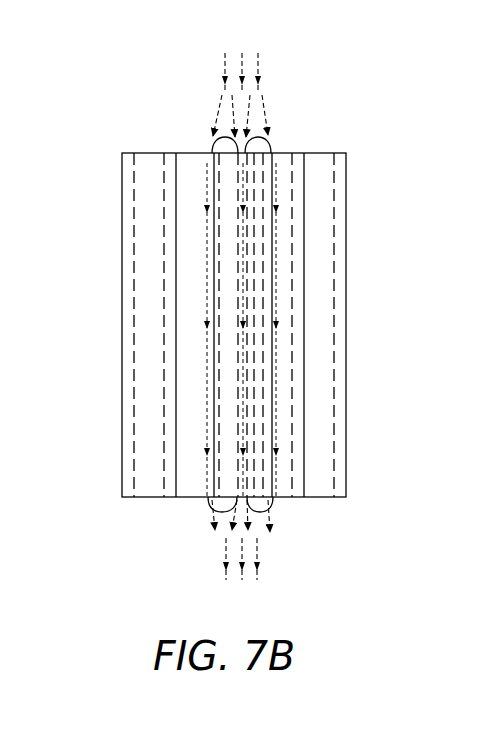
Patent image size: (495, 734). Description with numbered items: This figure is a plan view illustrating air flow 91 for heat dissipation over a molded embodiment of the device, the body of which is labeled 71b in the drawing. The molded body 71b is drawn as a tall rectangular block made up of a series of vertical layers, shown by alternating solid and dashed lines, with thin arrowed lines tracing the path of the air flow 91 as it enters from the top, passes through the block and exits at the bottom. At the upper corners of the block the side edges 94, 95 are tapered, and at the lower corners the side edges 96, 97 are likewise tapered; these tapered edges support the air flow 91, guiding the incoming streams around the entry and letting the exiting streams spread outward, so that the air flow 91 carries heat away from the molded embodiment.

The layered element 71b is at (104, 171).
The air flow 91 is at (240, 69).
The side edge 94 is at (217, 140).
The side edge 95 is at (255, 143).
The side edge 96 is at (227, 503).
The side edge 97 is at (257, 503).